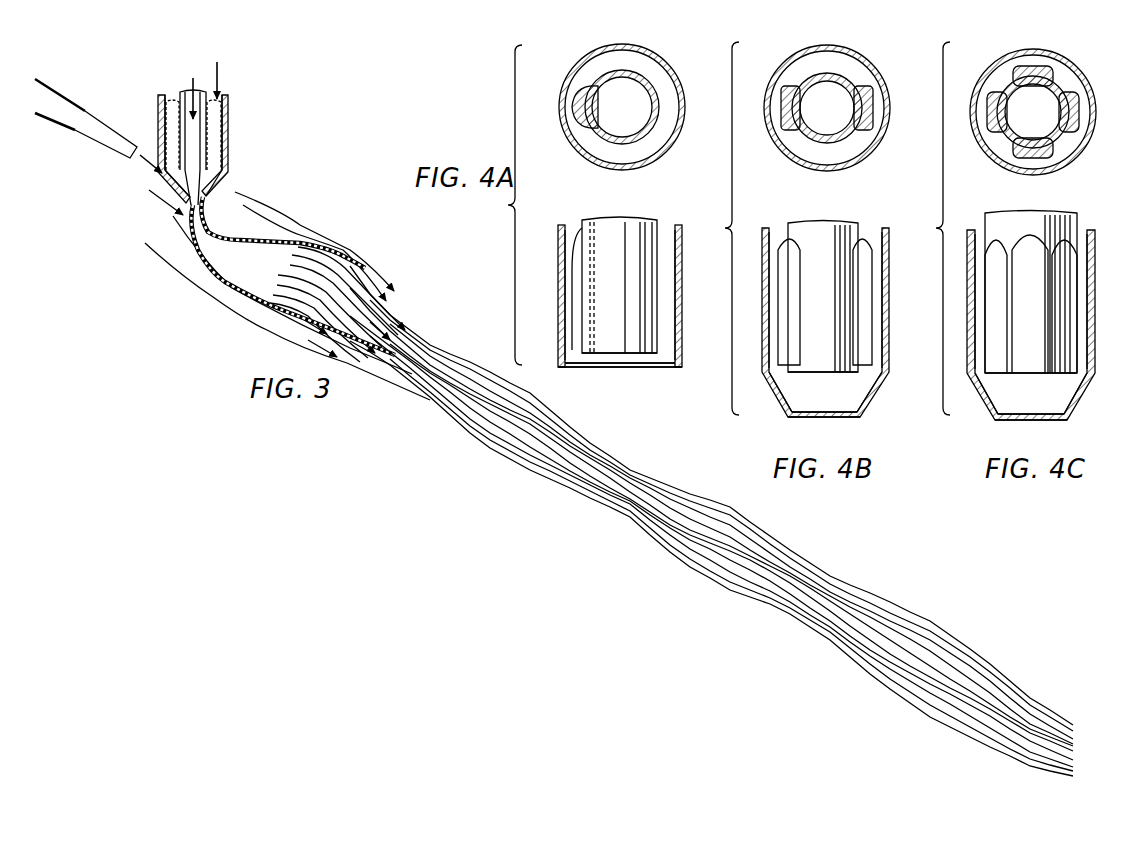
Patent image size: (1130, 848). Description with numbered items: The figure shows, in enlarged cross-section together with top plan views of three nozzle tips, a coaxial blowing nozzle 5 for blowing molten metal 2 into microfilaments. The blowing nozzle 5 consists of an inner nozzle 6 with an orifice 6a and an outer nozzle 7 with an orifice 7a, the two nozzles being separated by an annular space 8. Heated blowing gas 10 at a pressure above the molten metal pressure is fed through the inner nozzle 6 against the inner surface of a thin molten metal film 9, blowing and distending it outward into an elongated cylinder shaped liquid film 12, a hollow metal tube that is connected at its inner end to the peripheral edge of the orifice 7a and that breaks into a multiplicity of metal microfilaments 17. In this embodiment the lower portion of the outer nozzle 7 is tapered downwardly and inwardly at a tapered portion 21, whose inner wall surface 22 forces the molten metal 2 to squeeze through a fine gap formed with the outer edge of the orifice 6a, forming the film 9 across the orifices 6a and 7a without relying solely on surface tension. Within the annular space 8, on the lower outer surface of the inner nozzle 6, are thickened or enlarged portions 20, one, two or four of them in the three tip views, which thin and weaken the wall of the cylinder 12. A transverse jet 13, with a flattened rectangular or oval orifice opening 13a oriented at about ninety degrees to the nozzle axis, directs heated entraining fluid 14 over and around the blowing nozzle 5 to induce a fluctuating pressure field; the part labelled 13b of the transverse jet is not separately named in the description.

In FIG. 3, the molten metal 2 is at (216, 70).
In FIG. 3, the coaxial blowing nozzle 5 is at (262, 198).
In FIG. 3, the inner coaxial nozzle 6 is at (212, 141).
In FIG. 4A, the inner coaxial nozzle 6 is at (603, 138).
In FIG. 4B, the inner coaxial nozzle 6 is at (808, 74).
In FIG. 4C, the inner coaxial nozzle 6 is at (1065, 138).
In FIG. 3, the orifice of inner nozzle 6a is at (192, 178).
In FIG. 4A, the orifice of inner nozzle 6a is at (610, 352).
In FIG. 4B, the orifice of inner nozzle 6a is at (813, 372).
In FIG. 4C, the orifice of inner nozzle 6a is at (1040, 373).
In FIG. 3, the outer coaxial nozzle 7 is at (233, 154).
In FIG. 4A, the outer coaxial nozzle 7 is at (567, 141).
In FIG. 4B, the outer coaxial nozzle 7 is at (805, 58).
In FIG. 4C, the outer coaxial nozzle 7 is at (1092, 152).
In FIG. 3, the orifice of outer nozzle 7a is at (172, 218).
In FIG. 4A, the orifice of outer nozzle 7a is at (657, 372).
In FIG. 4B, the orifice of outer nozzle 7a is at (817, 420).
In FIG. 4C, the orifice of outer nozzle 7a is at (1047, 427).
In FIG. 3, the annular space 8 is at (222, 130).
In FIG. 4A, the annular space 8 is at (657, 141).
In FIG. 4B, the annular space 8 is at (850, 63).
In FIG. 4C, the annular space 8 is at (1077, 88).
In FIG. 3, the molten metal film 9 is at (180, 183).
In FIG. 4A, the molten metal film 9 is at (622, 364).
In FIG. 4B, the molten metal film 9 is at (807, 391).
In FIG. 4C, the molten metal film 9 is at (1043, 398).
In FIG. 3, the blowing gas 10 is at (192, 113).
In FIG. 4A, the blowing gas 10 is at (640, 97).
In FIG. 4B, the blowing gas 10 is at (838, 93).
In FIG. 4C, the blowing gas 10 is at (1027, 95).
In FIG. 3, the elongated cylinder shaped liquid film 12 is at (338, 238).
In FIG. 3, the transverse jet 13 is at (54, 92).
In FIG. 3, the transverse jet nozzle orifice 13a is at (135, 160).
In FIG. 3, the air supply conduit 13b is at (103, 117).
In FIG. 3, the entraining fluid 14 is at (92, 137).
In FIG. 3, the metal microfilaments 17 is at (457, 431).
In FIG. 3, the thickened or enlarged portions 20 is at (172, 117).
In FIG. 4A, the thickened or enlarged portions 20 is at (582, 92).
In FIG. 4B, the thickened or enlarged portions 20 is at (787, 116).
In FIG. 4C, the thickened or enlarged portions 20 is at (1040, 77).
In FIG. 3, the tapered portion 21 is at (206, 193).
In FIG. 4B, the tapered portion 21 is at (877, 398).
In FIG. 4C, the tapered portion 21 is at (985, 409).
In FIG. 3, the inner wall surface of taper portion 22 is at (198, 181).
In FIG. 4B, the inner wall surface of taper portion 22 is at (870, 388).
In FIG. 4C, the inner wall surface of taper portion 22 is at (990, 398).